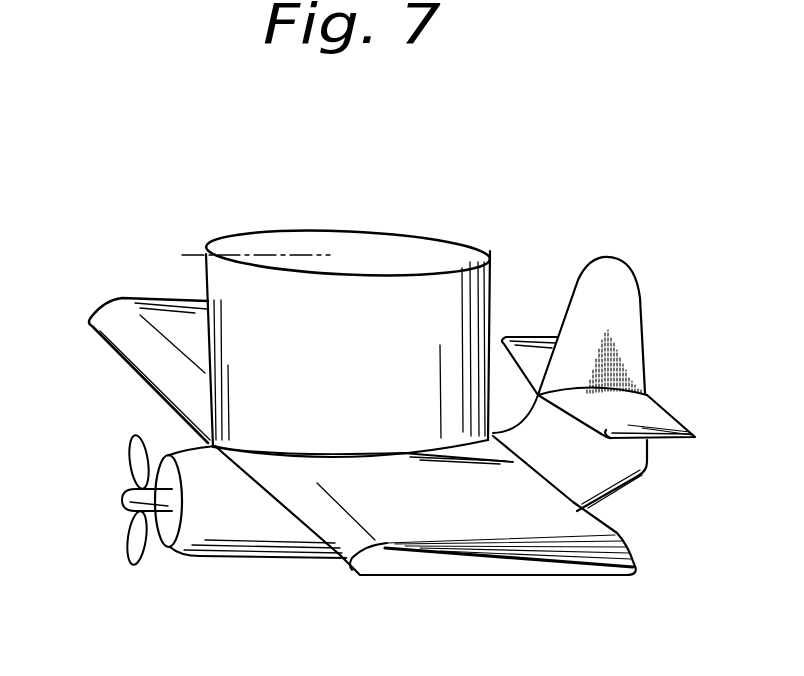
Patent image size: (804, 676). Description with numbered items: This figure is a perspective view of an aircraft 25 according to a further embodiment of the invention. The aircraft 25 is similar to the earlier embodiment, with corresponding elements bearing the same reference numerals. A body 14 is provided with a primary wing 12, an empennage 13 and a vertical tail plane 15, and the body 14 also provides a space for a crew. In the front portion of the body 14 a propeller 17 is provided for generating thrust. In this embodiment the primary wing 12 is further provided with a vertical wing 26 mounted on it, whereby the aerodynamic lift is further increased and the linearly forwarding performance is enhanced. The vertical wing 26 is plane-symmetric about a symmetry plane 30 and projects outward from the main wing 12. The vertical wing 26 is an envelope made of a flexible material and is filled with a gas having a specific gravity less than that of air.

The primary wing 12 is at (482, 568).
The empennage 13 is at (655, 415).
The body 14 is at (282, 541).
The vertical tail plane 15 is at (592, 298).
The propeller 17 is at (137, 566).
The aircraft 25 is at (143, 208).
The vertical wing 26 is at (415, 290).
The symmetry plane 30 is at (265, 255).